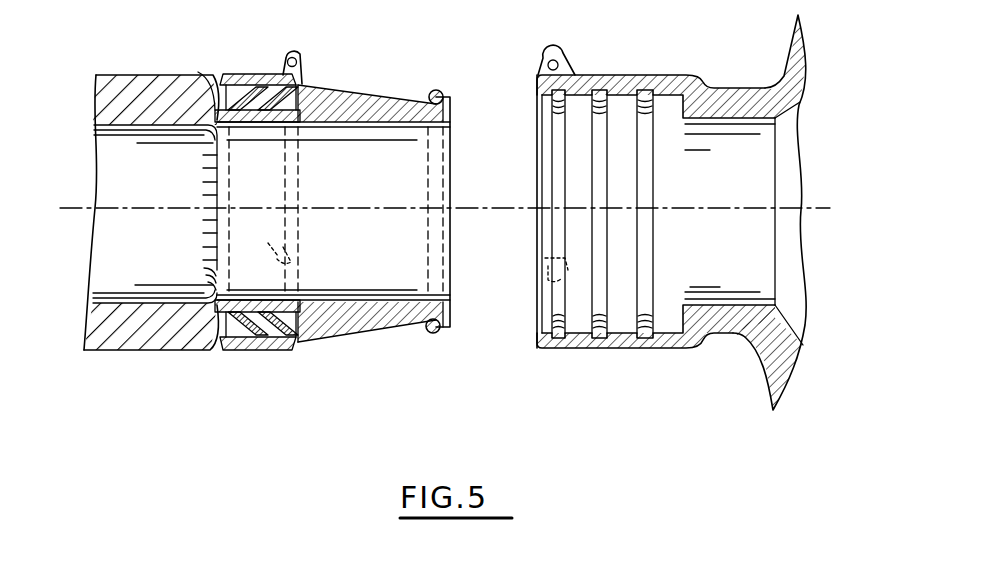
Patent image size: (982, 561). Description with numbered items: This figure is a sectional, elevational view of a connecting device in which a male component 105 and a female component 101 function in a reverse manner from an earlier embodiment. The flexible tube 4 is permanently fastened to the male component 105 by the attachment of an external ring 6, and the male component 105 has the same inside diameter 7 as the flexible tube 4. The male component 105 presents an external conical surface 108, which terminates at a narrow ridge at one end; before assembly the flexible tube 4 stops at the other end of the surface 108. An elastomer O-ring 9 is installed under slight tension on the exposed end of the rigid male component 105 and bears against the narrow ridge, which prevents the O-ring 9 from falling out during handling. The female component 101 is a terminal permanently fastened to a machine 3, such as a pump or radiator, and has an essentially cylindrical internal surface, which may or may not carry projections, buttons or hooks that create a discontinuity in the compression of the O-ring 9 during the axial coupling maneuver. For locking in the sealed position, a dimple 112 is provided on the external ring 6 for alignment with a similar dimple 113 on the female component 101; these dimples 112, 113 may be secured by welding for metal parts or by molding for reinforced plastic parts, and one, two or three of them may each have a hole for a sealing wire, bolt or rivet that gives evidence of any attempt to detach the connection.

The machine 3 is at (791, 67).
The flexible tube 4 is at (158, 104).
The external ring 6 is at (246, 72).
The inside diameter 7 is at (273, 135).
The elastomer O-ring 9 is at (433, 334).
The female component 101 is at (608, 78).
The male component 105 is at (403, 107).
The external conical surface 108 is at (340, 84).
The dimple 112 is at (297, 52).
The dimple 113 is at (557, 55).